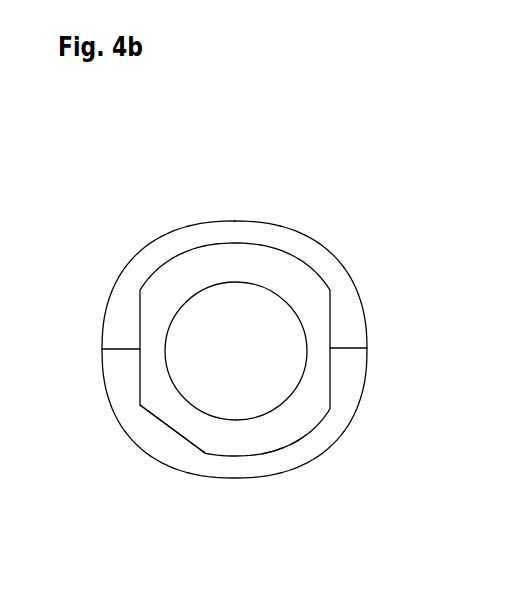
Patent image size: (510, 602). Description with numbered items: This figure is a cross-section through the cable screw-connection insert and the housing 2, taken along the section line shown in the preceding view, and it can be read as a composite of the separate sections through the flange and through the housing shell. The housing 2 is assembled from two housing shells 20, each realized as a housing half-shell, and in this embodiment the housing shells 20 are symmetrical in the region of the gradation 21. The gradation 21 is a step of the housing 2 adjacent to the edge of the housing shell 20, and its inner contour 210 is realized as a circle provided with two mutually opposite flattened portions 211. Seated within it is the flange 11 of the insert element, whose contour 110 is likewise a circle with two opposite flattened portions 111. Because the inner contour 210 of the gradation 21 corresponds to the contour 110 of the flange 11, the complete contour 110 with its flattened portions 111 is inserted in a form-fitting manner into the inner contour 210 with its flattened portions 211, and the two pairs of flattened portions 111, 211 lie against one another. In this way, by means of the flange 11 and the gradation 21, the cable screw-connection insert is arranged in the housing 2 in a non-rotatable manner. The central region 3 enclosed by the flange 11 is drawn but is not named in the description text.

The housing 2 is at (222, 150).
The inner fluid channel 3 is at (238, 308).
The flange 11 is at (315, 301).
The housing shell 20 is at (350, 316).
The gradation 21 is at (277, 447).
The contour of the flange 110 is at (296, 438).
The inner contour of the gradation 210 is at (369, 470).
The flattened portions 111 is at (138, 348).
The flattened portions 211 is at (413, 379).